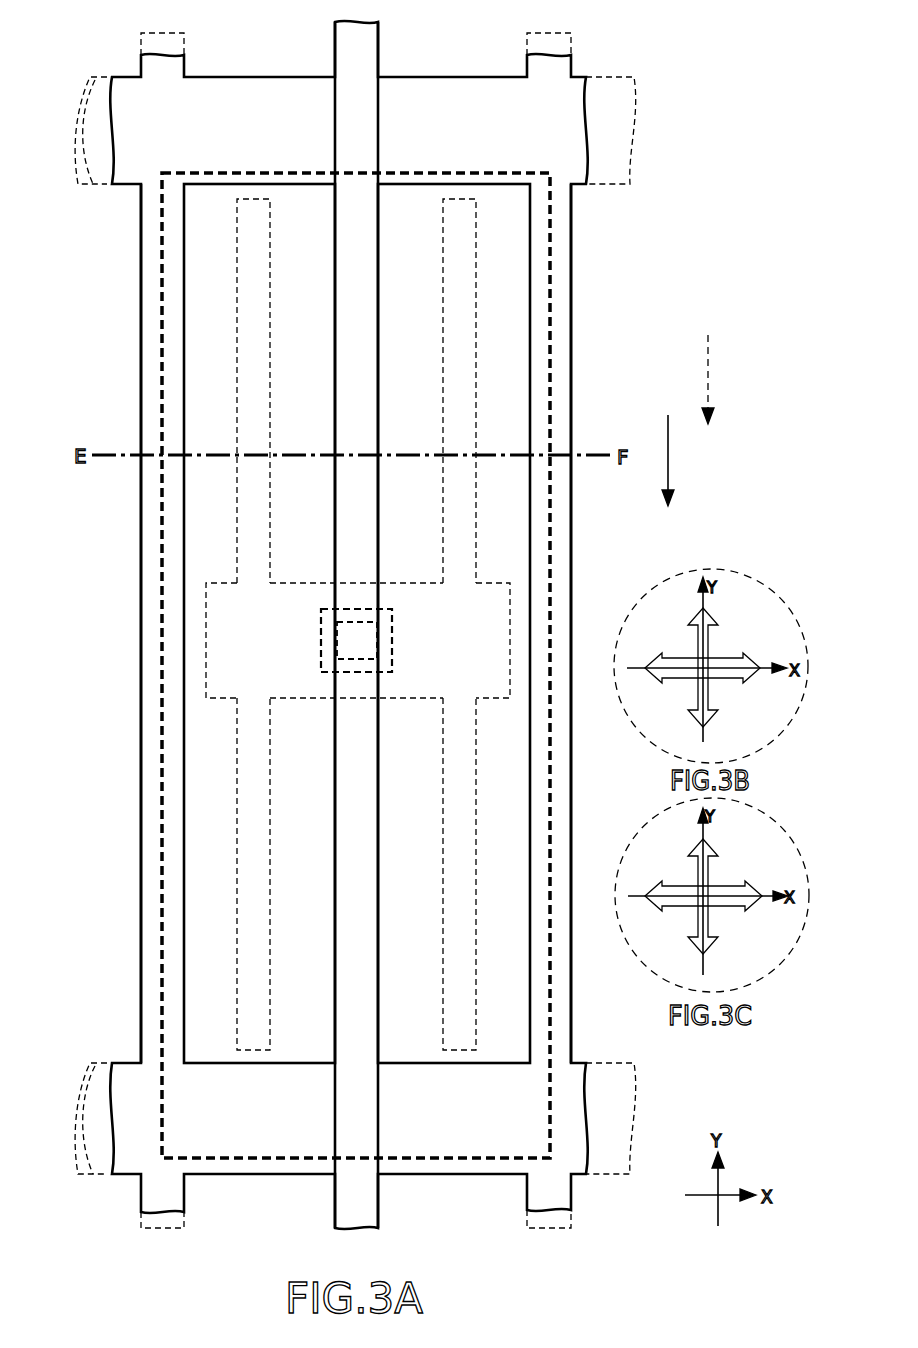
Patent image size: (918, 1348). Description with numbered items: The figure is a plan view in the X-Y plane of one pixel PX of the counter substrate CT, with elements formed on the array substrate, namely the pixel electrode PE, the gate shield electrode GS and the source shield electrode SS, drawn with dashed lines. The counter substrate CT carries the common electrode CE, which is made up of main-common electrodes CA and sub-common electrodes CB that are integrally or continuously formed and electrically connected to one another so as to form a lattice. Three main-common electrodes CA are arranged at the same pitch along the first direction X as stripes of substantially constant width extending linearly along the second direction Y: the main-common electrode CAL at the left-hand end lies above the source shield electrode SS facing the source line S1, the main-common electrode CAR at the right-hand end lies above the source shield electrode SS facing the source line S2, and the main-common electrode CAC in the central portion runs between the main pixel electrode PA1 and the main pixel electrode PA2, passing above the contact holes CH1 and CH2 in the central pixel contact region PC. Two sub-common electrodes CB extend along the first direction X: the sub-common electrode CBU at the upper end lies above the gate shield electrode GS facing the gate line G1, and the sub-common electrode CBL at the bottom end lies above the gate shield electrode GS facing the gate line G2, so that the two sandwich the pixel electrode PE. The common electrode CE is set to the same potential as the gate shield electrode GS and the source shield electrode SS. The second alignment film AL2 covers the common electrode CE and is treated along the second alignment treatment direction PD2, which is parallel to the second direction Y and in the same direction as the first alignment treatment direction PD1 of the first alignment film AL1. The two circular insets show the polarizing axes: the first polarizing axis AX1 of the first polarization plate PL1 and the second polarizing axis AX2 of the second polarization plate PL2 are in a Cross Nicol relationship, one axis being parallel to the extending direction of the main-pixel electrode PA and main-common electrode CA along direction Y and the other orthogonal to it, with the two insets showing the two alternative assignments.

In FIG. 3A, the counter substrate CT is at (676, 188).
In FIG. 3A, the sub-common electrode CB is at (418, 625).
In FIG. 3A, the sub-common electrode CBU is at (438, 77).
In FIG. 3A, the sub-common electrode CBL is at (470, 1174).
In FIG. 3A, the main-common electrode CA is at (380, 623).
In FIG. 3A, the main-common electrode CAR is at (571, 545).
In FIG. 3A, the main-common electrode CAL is at (141, 880).
In FIG. 3A, the main-common electrode CAC is at (340, 865).
In FIG. 3A, the pixel electrode PE is at (480, 297).
In FIG. 3A, the pixel PX is at (560, 418).
In FIG. 3A, the main-pixel electrode PA is at (356, 624).
In FIG. 3A, the main pixel electrode PA1 is at (218, 902).
In FIG. 3A, the main pixel electrode PA2 is at (492, 903).
In FIG. 3A, the pixel contact region PC is at (410, 583).
In FIG. 3A, the contact hole CH1 is at (370, 617).
In FIG. 3A, the contact hole CH2 is at (393, 655).
In FIG. 3A, the source shield electrode SS is at (381, 28).
In FIG. 3A, the source line S1 is at (148, 33).
In FIG. 3A, the source line S2 is at (560, 33).
In FIG. 3A, the gate shield electrode GS is at (372, 612).
In FIG. 3A, the gate line G1 is at (77, 125).
In FIG. 3A, the gate line G2 is at (84, 1115).
In FIG. 3A, the common electrode CE is at (139, 1192).
In FIG. 3A, the first alignment treatment direction PD1 is at (710, 386).
In FIG. 3A, the first alignment film AL1 is at (766, 379).
In FIG. 3A, the second alignment treatment direction PD2 is at (668, 458).
In FIG. 3A, the second alignment film AL2 is at (725, 460).
In FIG. 3B, the first polarizing axis AX1 is at (737, 680).
In FIG. 3C, the first polarizing axis AX1 is at (707, 860).
In FIG. 3B, the first polarization plate PL1 is at (704, 695).
In FIG. 3C, the first polarization plate PL1 is at (735, 896).
In FIG. 3B, the second polarizing axis AX2 is at (713, 631).
In FIG. 3C, the second polarizing axis AX2 is at (738, 908).
In FIG. 3B, the second polarization plate PL2 is at (734, 667).
In FIG. 3C, the second polarization plate PL2 is at (704, 923).